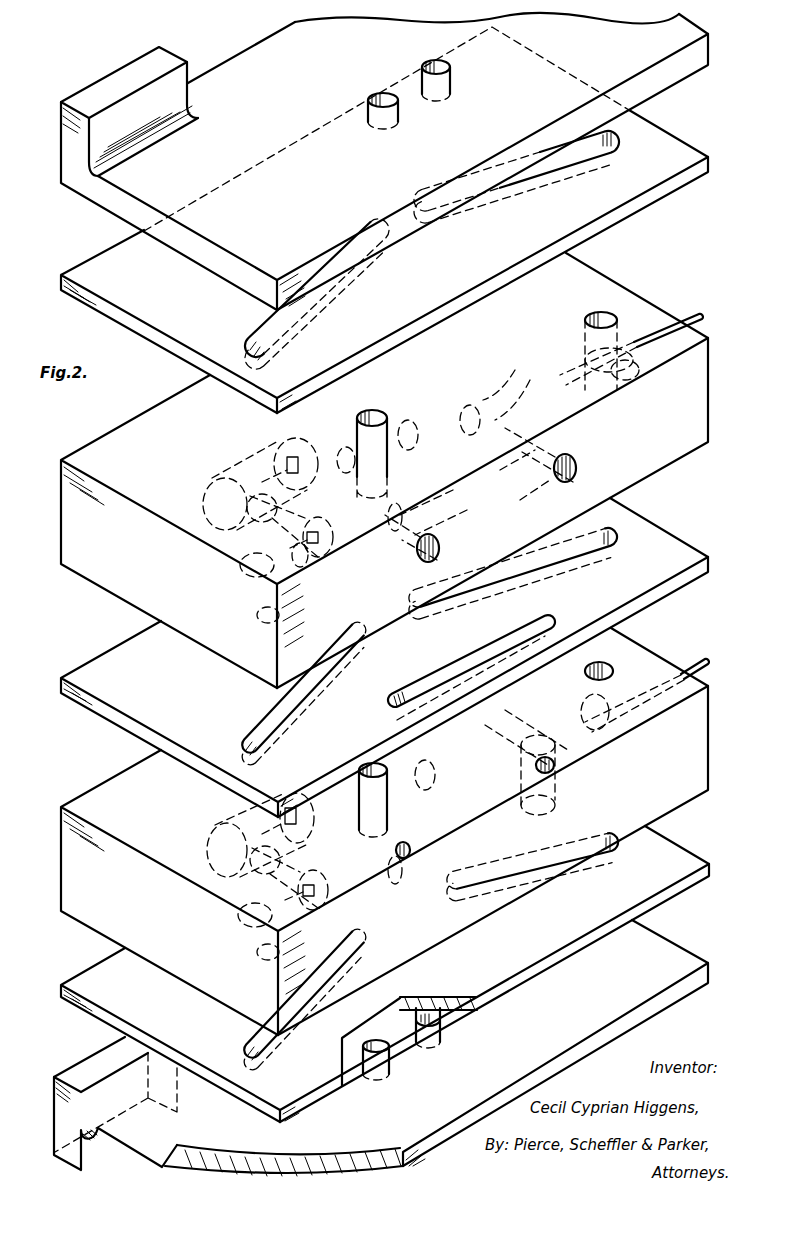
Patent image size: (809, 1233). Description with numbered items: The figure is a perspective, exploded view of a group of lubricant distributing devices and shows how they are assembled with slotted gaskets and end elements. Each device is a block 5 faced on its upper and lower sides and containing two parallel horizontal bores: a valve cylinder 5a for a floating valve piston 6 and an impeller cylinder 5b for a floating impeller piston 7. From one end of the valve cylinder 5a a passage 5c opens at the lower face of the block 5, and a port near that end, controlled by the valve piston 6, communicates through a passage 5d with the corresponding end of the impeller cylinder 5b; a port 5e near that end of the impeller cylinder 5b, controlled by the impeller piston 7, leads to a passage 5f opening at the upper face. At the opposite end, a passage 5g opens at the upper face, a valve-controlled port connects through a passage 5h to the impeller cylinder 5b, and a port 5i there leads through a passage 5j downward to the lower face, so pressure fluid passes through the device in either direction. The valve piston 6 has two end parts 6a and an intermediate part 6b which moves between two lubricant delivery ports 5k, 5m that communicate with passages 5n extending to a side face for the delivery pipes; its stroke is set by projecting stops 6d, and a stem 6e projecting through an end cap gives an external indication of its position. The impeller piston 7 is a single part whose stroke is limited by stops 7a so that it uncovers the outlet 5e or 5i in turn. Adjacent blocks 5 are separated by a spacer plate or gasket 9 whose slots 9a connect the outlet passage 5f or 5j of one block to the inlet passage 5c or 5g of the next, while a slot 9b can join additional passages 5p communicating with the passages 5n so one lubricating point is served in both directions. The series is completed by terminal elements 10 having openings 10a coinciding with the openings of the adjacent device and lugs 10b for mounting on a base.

The block 5 is at (138, 422).
The valve cylinder 5a is at (242, 573).
The impeller cylinder 5b is at (215, 478).
The passage 5c is at (268, 624).
The passage 5d is at (232, 547).
The port 5e is at (350, 448).
The passage 5f is at (373, 410).
The passage 5g is at (587, 317).
The passage 5h is at (517, 368).
The port 5i is at (405, 416).
The passage 5j is at (446, 584).
The lubricant delivery port 5k is at (390, 535).
The lubricant delivery port 5m is at (533, 463).
The lubricant delivery passage 5n is at (558, 480).
The additional passage 5p is at (556, 766).
The valve piston 6 is at (328, 552).
The end part 6a is at (325, 528).
The intermediate part 6b is at (455, 488).
The projecting stop 6d is at (305, 565).
The stem 6e is at (575, 360).
The impeller piston 7 is at (280, 440).
The stop 7a is at (255, 452).
The spacer plate or gasket 9 is at (98, 255).
The slot 9a is at (248, 335).
The slot 9b is at (547, 620).
The terminal element 10 is at (228, 80).
The opening 10a is at (428, 66).
The lug 10b is at (65, 1130).